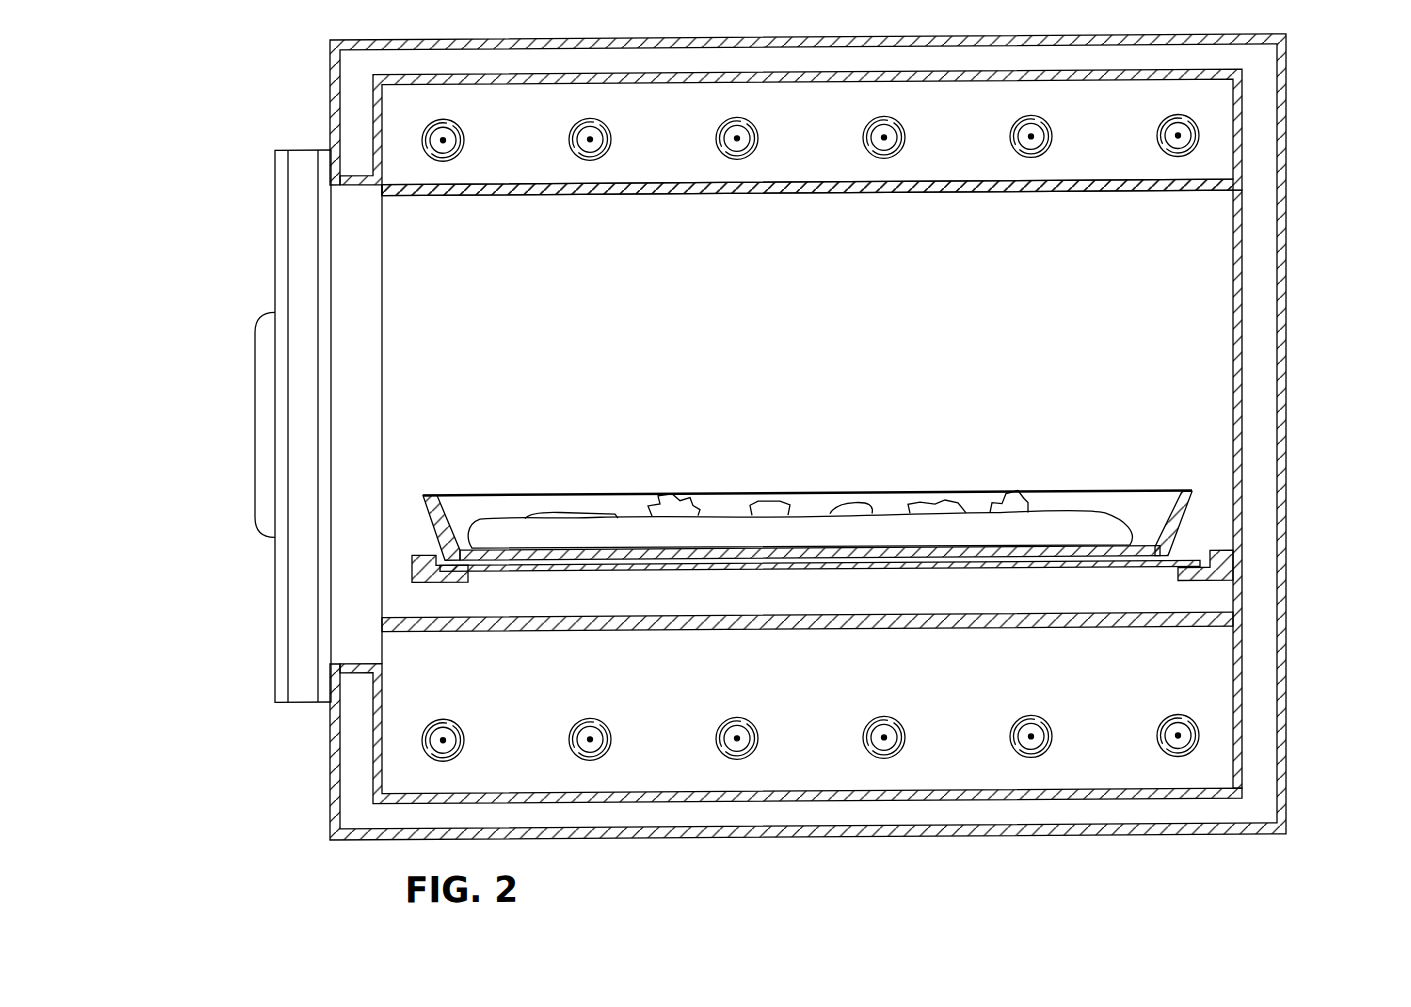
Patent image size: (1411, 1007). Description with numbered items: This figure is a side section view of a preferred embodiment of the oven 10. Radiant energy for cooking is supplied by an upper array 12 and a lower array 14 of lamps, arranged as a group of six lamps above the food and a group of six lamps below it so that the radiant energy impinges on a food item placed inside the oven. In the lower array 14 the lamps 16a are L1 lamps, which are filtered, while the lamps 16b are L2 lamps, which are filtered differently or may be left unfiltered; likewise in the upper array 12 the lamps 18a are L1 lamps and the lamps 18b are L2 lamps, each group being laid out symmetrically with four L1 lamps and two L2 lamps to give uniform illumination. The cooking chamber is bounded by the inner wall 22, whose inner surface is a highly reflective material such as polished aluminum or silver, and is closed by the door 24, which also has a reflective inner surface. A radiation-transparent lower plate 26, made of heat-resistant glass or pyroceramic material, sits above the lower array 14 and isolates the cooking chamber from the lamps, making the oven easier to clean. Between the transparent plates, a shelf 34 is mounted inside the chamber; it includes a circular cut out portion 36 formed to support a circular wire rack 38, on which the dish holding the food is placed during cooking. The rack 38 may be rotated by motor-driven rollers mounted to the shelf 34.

The oven 10 is at (1287, 388).
The upper array of radiant energy sources 12 is at (1200, 106).
The lower array of radiant energy sources 14 is at (1202, 762).
The lamp 16a is at (612, 741).
The lamp 16b is at (465, 741).
The lamp 18a is at (465, 141).
The lamp 18b is at (612, 141).
The inner wall 22 is at (1233, 339).
The door 24 is at (256, 252).
The lower transparent plate 26 is at (905, 634).
The shelf 34 is at (417, 562).
The circular cut out portion 36 is at (432, 522).
The circular wire rack 38 is at (640, 573).